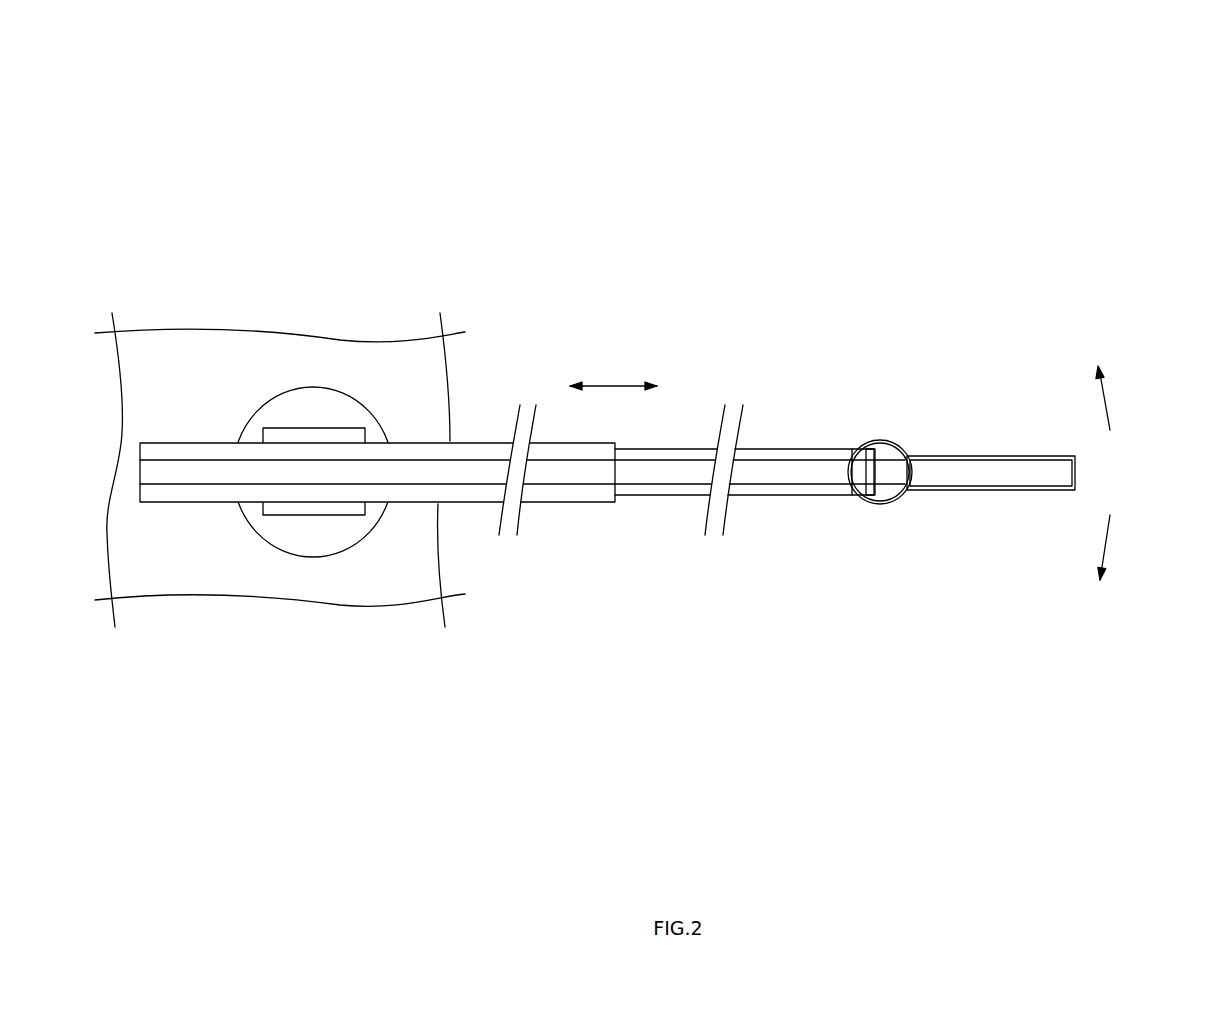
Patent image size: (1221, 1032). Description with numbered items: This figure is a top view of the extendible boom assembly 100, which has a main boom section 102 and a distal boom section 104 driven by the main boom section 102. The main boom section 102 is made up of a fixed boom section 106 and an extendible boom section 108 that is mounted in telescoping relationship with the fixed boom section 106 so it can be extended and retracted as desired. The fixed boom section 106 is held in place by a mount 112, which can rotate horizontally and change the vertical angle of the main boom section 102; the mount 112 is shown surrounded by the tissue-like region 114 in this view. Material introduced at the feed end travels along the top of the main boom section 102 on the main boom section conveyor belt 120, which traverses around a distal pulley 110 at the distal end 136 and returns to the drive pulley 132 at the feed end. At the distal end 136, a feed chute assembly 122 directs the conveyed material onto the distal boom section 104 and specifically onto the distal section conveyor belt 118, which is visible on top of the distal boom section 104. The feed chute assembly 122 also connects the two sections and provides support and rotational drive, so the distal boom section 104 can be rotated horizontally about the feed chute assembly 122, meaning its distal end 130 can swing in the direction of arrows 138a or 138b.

The extendible boom assembly 100 is at (1137, 37).
The main boom section 102 is at (553, 437).
The distal boom section 104 is at (1008, 488).
The fixed boom section 106 is at (552, 503).
The extendible boom section 108 is at (683, 497).
The distal pulley 110 is at (882, 473).
The mount 112 is at (282, 552).
The tissue 114 is at (208, 352).
The distal section conveyor belt 118 is at (955, 468).
The main boom section conveyor belt 120 is at (685, 467).
The feed chute assembly 122 is at (862, 513).
The distal end 130 is at (1075, 472).
The drive pulley 132 is at (140, 468).
The distal end 136 is at (864, 462).
The arrow 138a is at (1110, 405).
The arrow 138b is at (1108, 537).